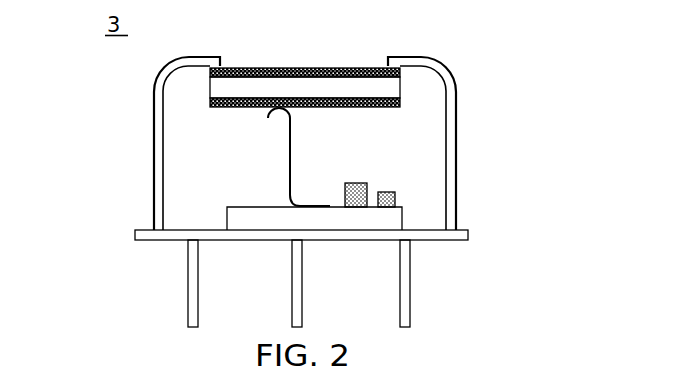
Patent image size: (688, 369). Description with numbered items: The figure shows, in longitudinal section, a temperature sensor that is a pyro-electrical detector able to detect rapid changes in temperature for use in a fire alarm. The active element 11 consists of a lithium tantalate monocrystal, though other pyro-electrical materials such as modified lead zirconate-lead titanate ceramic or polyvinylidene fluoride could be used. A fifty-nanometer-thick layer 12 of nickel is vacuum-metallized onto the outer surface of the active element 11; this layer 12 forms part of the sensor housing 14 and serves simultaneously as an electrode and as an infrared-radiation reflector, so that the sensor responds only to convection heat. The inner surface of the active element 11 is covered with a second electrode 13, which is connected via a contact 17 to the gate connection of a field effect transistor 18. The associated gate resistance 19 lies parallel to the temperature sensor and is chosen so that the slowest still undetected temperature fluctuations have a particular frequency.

The active element 11 is at (331, 86).
The layer of nickel 12 is at (267, 67).
The second electrode 13 is at (210, 100).
The sensor housing 14 is at (153, 89).
The contact 17 is at (290, 183).
The field effect transistor 18 is at (367, 185).
The gate resistance 19 is at (395, 200).